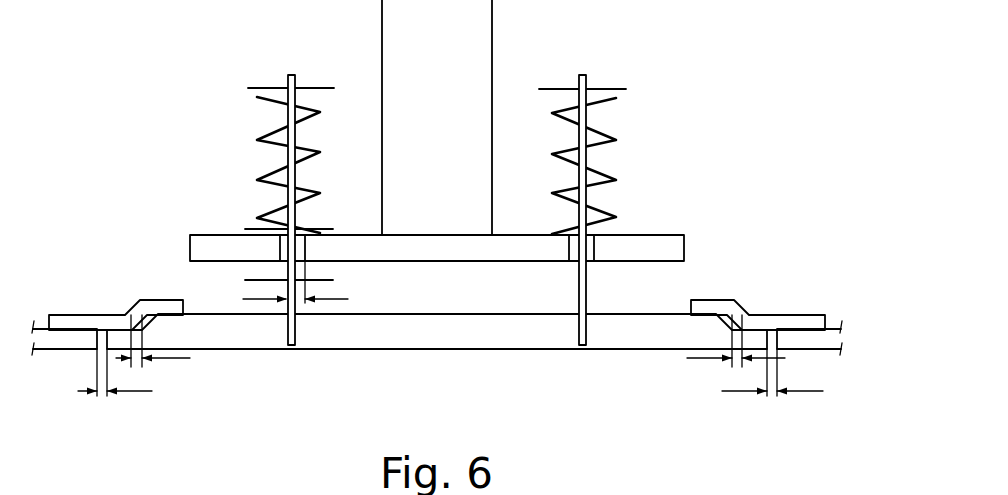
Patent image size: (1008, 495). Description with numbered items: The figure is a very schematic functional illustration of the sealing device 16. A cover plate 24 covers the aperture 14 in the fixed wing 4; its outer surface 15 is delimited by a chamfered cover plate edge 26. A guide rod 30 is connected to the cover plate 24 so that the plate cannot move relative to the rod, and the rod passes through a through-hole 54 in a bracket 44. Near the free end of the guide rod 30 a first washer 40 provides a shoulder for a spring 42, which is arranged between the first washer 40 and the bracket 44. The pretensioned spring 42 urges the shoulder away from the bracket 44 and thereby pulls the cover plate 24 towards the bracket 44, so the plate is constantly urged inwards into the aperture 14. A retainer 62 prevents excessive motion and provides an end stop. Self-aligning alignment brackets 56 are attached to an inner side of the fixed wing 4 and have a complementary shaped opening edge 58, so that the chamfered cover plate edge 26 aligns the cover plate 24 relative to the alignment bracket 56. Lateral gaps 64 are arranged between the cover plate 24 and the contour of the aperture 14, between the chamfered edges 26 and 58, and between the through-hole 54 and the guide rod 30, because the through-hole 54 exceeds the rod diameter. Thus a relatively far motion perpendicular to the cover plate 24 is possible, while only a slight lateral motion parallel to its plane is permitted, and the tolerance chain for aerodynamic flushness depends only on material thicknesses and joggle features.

The fixed wing 4 is at (469, 368).
The aperture 14 is at (790, 340).
The outer surface 15 is at (437, 397).
The sealing device 16 is at (720, 167).
The cover plate 24 is at (410, 350).
The cover plate edge 26 is at (718, 323).
The guide rod 30 is at (295, 138).
The first washer 40 is at (252, 88).
The spring 42 is at (268, 173).
The bracket 44 is at (370, 247).
The through-hole 54 is at (300, 243).
The alignment bracket 56 is at (449, 361).
The opening edge 58 is at (736, 298).
The retainer 62 is at (257, 280).
The lateral gap 64 is at (104, 336).